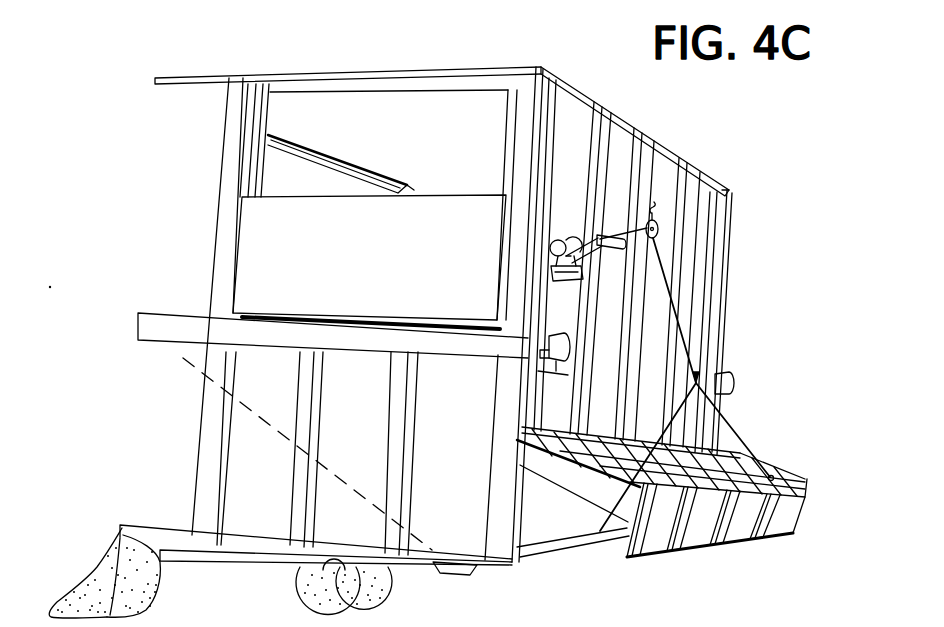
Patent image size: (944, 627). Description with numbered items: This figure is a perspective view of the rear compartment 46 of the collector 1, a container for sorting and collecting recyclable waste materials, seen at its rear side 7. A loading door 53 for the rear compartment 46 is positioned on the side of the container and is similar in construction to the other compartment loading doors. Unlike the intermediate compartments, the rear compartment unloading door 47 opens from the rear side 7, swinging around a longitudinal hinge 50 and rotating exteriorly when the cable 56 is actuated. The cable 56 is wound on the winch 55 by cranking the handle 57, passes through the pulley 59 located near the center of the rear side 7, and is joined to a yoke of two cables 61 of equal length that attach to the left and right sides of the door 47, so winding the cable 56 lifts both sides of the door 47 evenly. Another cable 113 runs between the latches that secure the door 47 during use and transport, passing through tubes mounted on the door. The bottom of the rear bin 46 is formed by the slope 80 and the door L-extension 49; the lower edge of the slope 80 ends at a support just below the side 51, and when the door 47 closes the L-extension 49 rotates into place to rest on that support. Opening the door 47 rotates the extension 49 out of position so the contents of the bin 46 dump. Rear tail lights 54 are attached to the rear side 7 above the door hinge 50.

The collector 1 is at (417, 70).
The rear side 7 is at (723, 254).
The rear compartment 46 is at (347, 187).
The rear compartment unloading door 47 is at (604, 525).
The door L-extension 49 is at (742, 548).
The longitudinal hinge 50 is at (700, 433).
The side 51 is at (477, 573).
The loading door 53 is at (392, 258).
The rear tail lights 54 is at (540, 367).
The winch 55 is at (568, 232).
The cable 56 is at (688, 348).
The handle 57 is at (557, 270).
The pulley 59 is at (657, 220).
The cables 61 is at (712, 459).
The slope 80 is at (558, 518).
The cable 113 is at (802, 508).